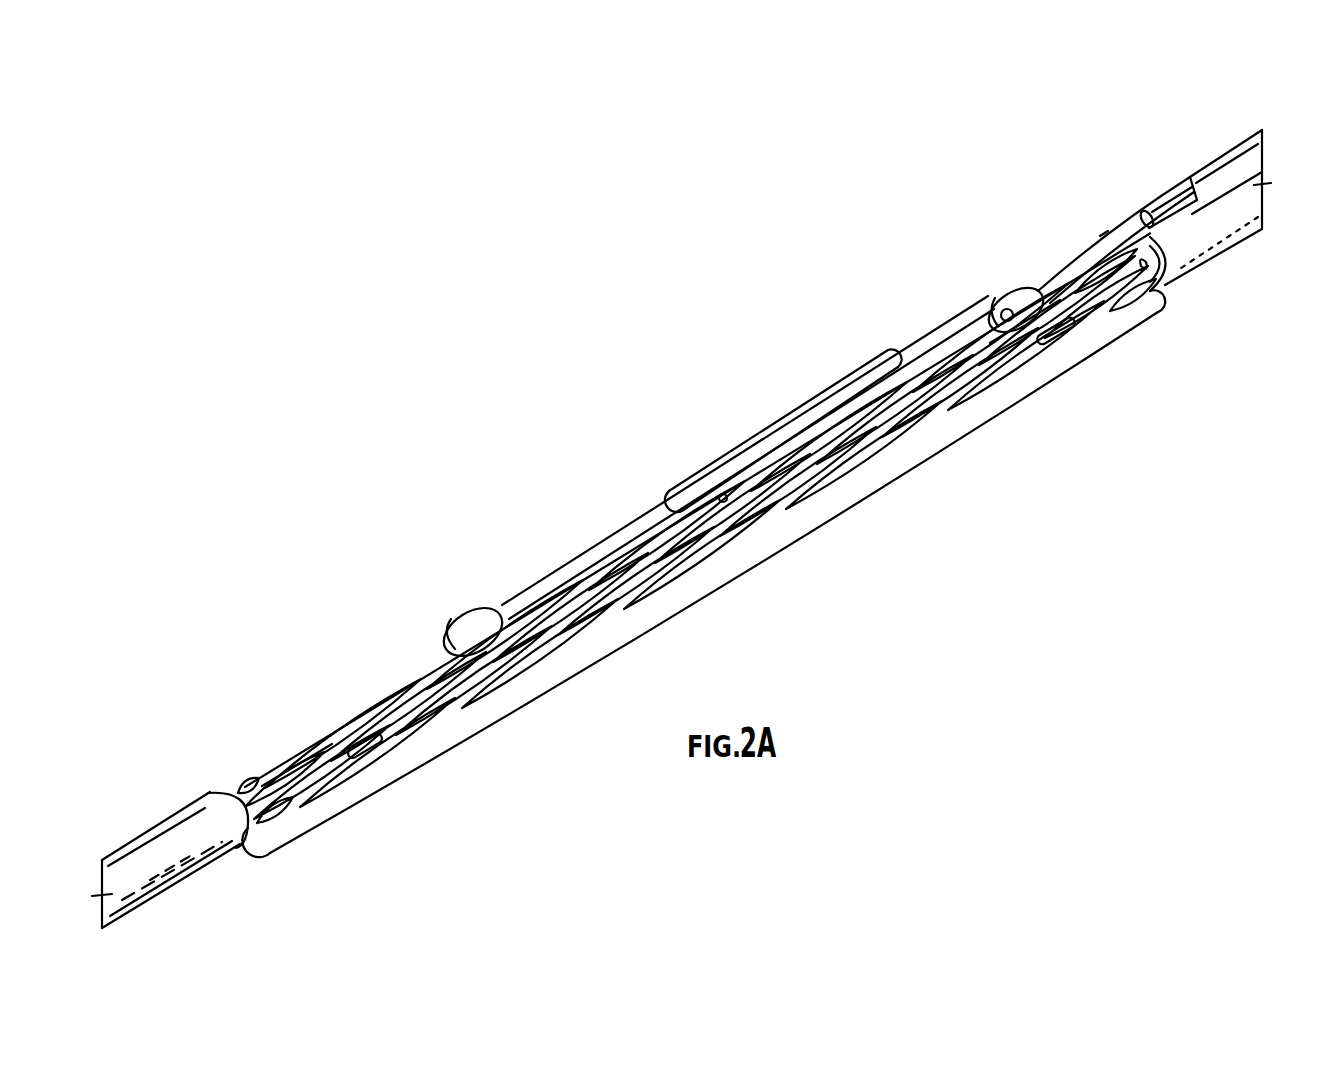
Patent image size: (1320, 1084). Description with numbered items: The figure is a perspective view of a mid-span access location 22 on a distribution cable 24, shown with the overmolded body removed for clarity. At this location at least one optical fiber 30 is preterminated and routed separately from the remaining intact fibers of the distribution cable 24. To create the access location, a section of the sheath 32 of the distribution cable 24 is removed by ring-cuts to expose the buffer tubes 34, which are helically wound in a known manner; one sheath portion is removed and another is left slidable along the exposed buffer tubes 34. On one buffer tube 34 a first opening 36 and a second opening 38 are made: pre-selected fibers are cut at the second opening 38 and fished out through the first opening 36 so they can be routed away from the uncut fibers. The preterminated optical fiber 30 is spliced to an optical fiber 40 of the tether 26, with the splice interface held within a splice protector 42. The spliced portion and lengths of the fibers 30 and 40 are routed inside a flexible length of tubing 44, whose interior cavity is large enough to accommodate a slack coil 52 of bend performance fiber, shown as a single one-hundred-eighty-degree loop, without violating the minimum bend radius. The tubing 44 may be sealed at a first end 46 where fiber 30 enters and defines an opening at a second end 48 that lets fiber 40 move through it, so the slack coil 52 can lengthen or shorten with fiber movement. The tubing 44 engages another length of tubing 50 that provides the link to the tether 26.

The mid-span access location 22 is at (682, 609).
The distribution cable 24 is at (142, 837).
The tether 26 is at (1220, 157).
The optical fiber 30 is at (430, 662).
The sheath 32 is at (193, 853).
The buffer tube 34 is at (297, 763).
The first opening 36 is at (372, 755).
The second opening 38 is at (1068, 341).
The optical fiber 40 is at (1077, 262).
The splice protector 42 is at (740, 482).
The tubing 44 is at (548, 570).
The first end 46 is at (455, 620).
The second end 48 is at (1010, 297).
The tubing 50 is at (1100, 236).
The slack coil 52 is at (772, 430).